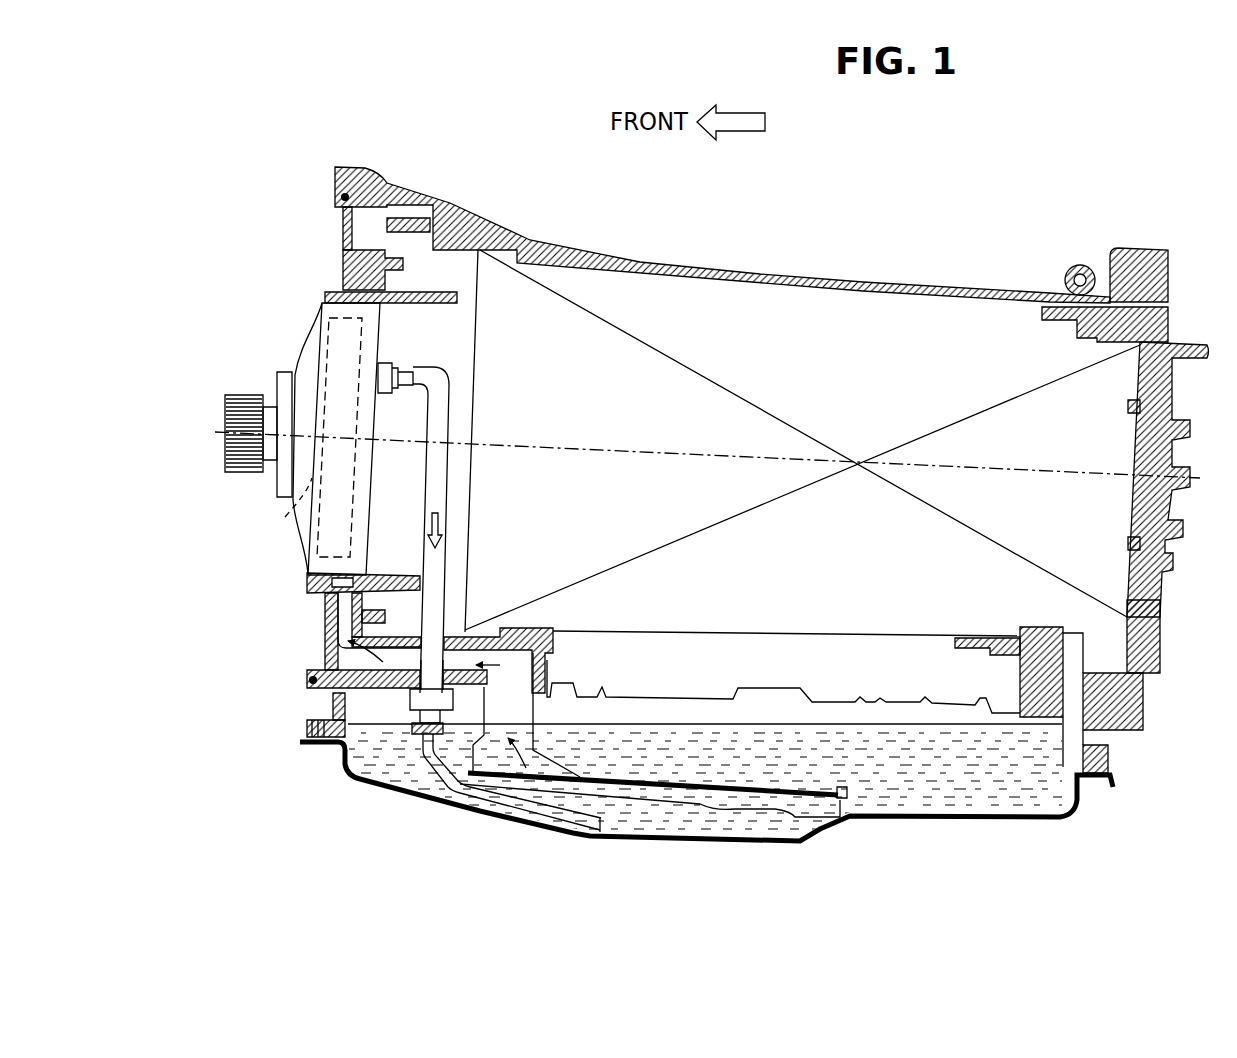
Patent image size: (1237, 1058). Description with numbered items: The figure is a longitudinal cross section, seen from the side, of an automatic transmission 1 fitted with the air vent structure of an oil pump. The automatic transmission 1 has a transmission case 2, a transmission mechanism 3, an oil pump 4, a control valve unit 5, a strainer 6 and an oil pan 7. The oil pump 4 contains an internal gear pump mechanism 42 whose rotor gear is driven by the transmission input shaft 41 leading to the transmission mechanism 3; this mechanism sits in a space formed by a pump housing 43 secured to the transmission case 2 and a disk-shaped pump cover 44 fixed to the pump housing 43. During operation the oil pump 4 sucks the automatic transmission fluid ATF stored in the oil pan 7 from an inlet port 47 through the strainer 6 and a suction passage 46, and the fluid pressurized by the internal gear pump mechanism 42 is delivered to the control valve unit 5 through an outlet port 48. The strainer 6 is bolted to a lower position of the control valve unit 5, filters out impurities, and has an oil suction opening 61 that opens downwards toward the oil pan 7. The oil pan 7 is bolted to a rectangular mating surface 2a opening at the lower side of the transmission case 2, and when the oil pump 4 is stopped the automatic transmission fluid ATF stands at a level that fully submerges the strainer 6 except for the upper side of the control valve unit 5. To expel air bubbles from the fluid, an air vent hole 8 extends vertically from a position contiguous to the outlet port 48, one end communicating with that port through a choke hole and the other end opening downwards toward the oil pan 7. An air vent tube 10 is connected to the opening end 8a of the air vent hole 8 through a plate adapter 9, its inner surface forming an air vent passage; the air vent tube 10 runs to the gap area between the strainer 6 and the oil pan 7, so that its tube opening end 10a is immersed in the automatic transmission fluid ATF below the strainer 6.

The automatic transmission 1 is at (757, 190).
The transmission case 2 is at (481, 221).
The mating surface 2a is at (337, 746).
The transmission mechanism 3 is at (893, 330).
The oil pump 4 is at (306, 342).
The transmission input shaft 41 is at (244, 394).
The internal gear pump mechanism 42 is at (285, 517).
The pump housing 43 is at (372, 327).
The pump cover 44 is at (303, 463).
The suction passage 46 is at (377, 688).
The inlet port 47 is at (330, 600).
The outlet port 48 is at (384, 378).
The control valve unit 5 is at (780, 684).
The strainer 6 is at (693, 805).
The oil suction opening 61 is at (762, 811).
The oil pan 7 is at (903, 823).
The air vent hole 8 is at (438, 468).
The opening end 8a is at (431, 686).
The plate adapter 9 is at (430, 704).
The air vent tube 10 is at (437, 782).
The tube opening end 10a is at (605, 833).
The automatic transmission fluid ATF is at (701, 722).